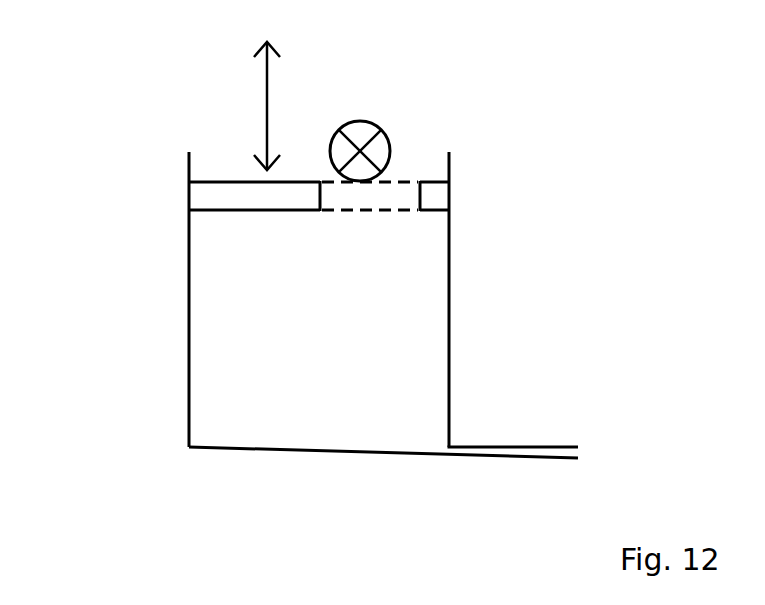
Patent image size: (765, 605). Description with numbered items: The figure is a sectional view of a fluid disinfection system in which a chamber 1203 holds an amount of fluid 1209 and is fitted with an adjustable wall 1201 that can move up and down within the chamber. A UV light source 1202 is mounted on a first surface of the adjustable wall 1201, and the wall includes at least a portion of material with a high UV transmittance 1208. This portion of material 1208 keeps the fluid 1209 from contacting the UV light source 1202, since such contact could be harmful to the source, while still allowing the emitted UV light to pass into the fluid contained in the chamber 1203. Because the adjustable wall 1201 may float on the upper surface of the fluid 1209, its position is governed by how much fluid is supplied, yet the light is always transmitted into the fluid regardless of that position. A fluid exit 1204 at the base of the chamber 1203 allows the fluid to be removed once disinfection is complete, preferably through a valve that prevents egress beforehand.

The adjustable wall 1201 is at (263, 198).
The UV light source 1202 is at (383, 123).
The chamber 1203 is at (181, 312).
The fluid exit 1204 is at (543, 430).
The portion of material with a high UV transmittance 1208 is at (410, 195).
The fluid 1209 is at (295, 312).